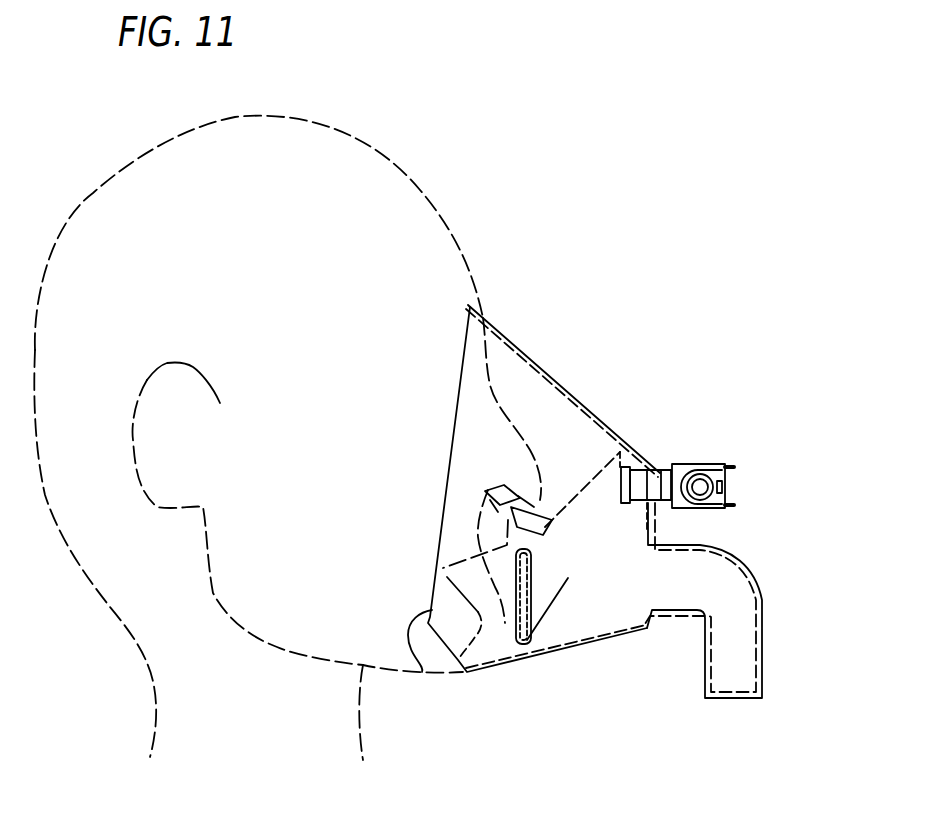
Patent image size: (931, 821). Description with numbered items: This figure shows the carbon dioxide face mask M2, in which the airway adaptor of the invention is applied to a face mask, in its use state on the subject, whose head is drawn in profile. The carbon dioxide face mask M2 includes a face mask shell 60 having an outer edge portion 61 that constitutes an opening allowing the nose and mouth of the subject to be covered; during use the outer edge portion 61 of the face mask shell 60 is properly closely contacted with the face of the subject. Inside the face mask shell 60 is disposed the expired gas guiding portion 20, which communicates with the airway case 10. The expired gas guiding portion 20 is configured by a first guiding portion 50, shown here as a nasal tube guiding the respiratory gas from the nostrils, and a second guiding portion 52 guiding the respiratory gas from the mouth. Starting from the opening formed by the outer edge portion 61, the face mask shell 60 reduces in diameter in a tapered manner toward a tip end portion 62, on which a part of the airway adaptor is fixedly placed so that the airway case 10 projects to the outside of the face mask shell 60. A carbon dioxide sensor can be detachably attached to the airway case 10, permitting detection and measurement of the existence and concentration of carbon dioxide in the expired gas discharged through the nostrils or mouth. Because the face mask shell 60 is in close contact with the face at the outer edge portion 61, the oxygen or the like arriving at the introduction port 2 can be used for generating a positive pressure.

The carbon dioxide face mask M2 is at (547, 337).
The introduction port 2 is at (745, 588).
The airway case 10 is at (705, 463).
The expired gas guiding portion 20 is at (586, 476).
The first guiding portion 50 is at (505, 623).
The second guiding portion 52 is at (570, 580).
The face mask shell 60 is at (562, 452).
The outer edge portion 61 is at (422, 672).
The tip end portion 62 is at (655, 468).